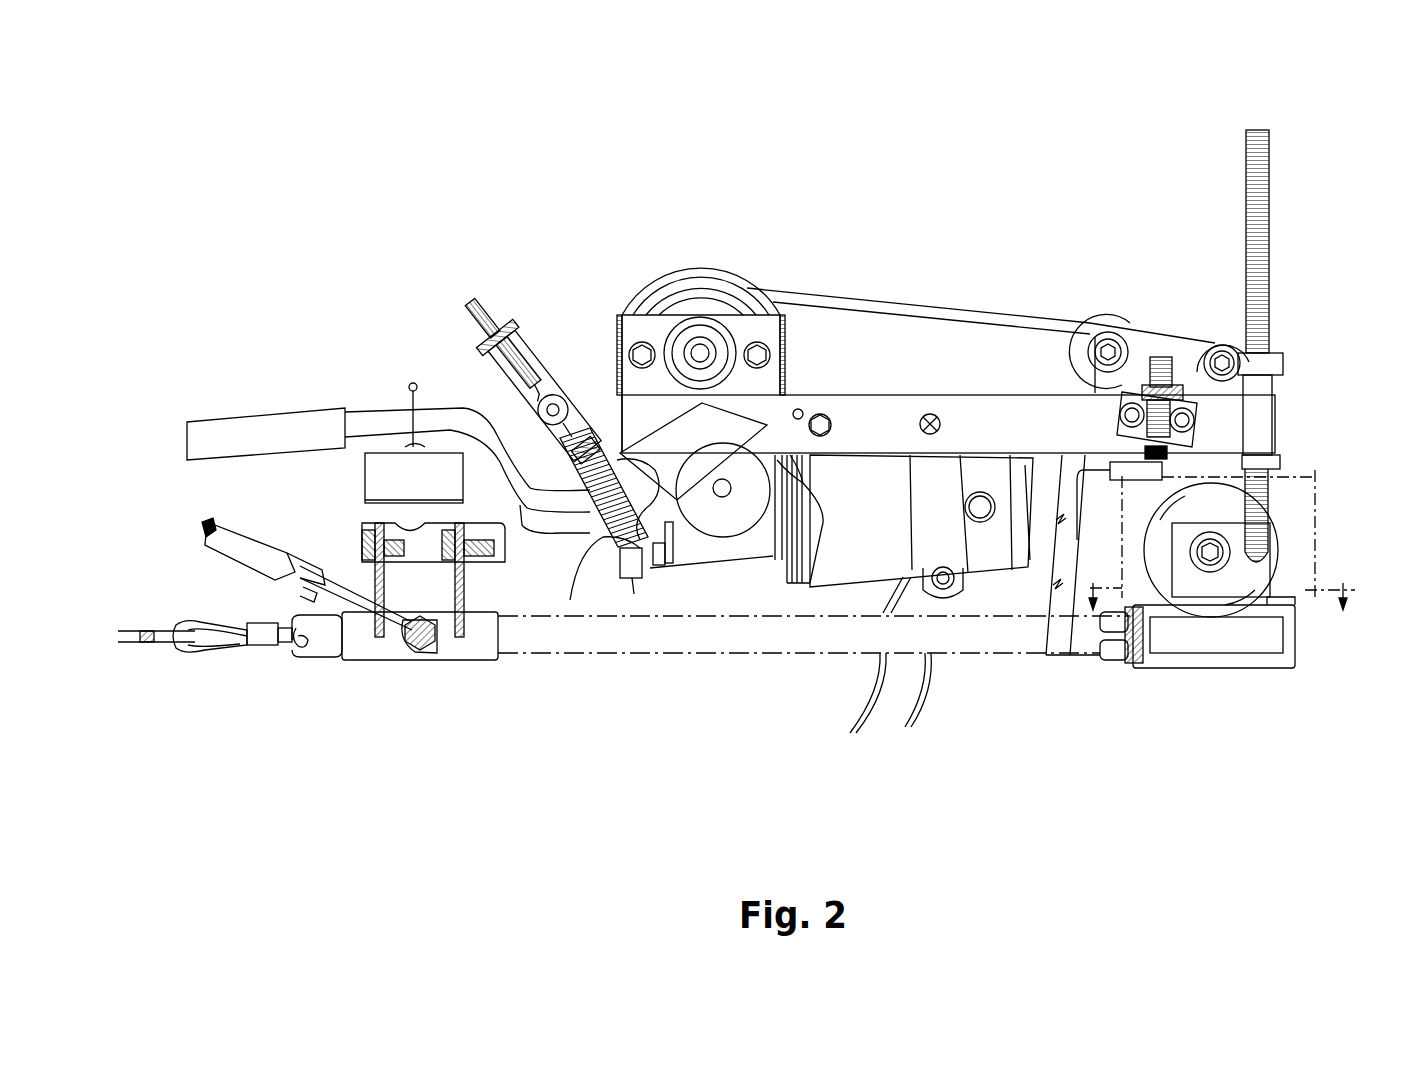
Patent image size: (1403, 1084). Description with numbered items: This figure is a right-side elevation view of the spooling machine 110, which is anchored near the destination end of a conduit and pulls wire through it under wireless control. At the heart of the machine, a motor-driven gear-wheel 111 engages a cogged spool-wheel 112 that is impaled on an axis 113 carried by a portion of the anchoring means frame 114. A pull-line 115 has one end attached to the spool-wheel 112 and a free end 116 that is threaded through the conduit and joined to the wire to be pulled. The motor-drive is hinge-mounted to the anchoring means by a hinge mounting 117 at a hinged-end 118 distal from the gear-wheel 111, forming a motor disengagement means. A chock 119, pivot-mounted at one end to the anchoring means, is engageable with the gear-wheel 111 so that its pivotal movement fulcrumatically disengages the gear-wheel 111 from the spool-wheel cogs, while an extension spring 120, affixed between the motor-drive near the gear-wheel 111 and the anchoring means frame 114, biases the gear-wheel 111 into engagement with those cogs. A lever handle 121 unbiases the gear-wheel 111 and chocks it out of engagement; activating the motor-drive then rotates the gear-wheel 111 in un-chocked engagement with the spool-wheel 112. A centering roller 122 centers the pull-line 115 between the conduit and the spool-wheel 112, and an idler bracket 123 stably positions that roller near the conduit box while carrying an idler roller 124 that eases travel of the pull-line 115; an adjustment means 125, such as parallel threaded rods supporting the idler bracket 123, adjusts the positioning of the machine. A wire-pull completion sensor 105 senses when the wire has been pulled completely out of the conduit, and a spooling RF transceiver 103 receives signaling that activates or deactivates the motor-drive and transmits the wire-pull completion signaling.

The spooling machine 110 is at (360, 243).
The spooling RF transceiver 103 is at (402, 470).
The wire-pull completion sensor 105 is at (1163, 370).
The motor-driven gear-wheel 111 is at (723, 520).
The cogged spool-wheel 112 is at (648, 307).
The axis 113 is at (700, 355).
The anchoring means frame 114 is at (768, 327).
The pull-line 115 is at (945, 312).
The free end 116 is at (197, 655).
The hinge mounting 117 is at (943, 593).
The hinged-end 118 is at (998, 537).
The chock 119 is at (810, 587).
The extension spring 120 is at (593, 537).
The lever handle 121 is at (215, 440).
The centering roller 122 is at (1227, 337).
The idler bracket 123 is at (1227, 633).
The idler roller 124 is at (1162, 577).
The adjustment means 125 is at (1285, 478).